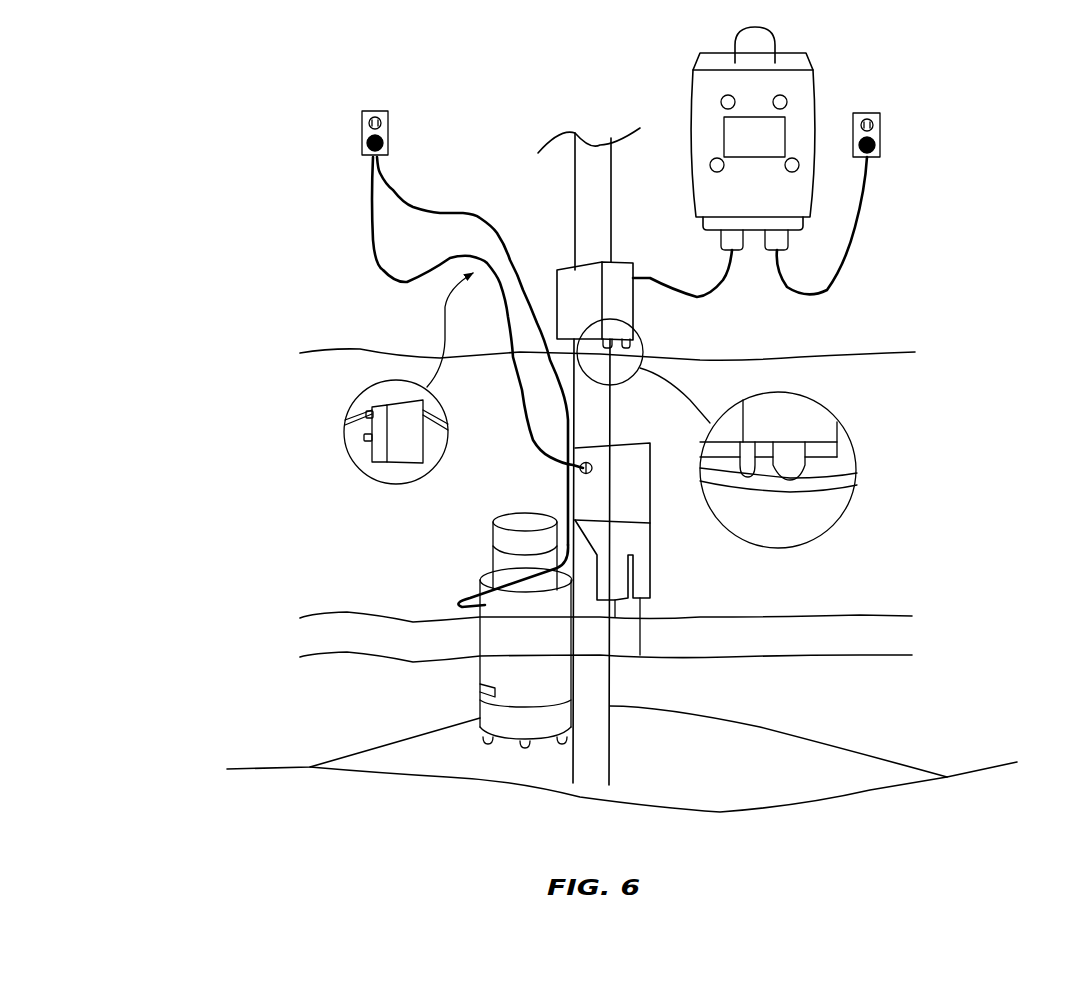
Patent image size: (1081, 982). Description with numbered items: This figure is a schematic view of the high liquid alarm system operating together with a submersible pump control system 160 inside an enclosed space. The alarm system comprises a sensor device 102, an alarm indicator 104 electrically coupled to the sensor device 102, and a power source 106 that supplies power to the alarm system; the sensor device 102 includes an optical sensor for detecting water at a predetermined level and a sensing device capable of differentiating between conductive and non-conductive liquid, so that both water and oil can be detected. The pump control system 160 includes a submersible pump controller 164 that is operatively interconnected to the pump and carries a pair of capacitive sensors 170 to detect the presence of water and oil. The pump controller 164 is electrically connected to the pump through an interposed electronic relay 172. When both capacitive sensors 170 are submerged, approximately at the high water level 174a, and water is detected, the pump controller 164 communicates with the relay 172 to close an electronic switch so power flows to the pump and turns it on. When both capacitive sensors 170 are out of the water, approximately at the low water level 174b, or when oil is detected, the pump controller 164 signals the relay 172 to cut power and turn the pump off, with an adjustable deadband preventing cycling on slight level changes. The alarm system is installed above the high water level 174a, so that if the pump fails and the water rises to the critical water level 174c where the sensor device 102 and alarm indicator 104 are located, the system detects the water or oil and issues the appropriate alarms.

The sensor device 102 is at (635, 313).
The alarm indicator 104 is at (682, 108).
The power source 106 is at (480, 688).
The pump control system 160 is at (918, 544).
The pump controller 164 is at (643, 560).
The capacitive sensors 170 is at (623, 615).
The electronic relay 172 is at (345, 433).
The high water level 174a is at (300, 618).
The low water level 174b is at (300, 657).
The critical water level 174c is at (300, 353).